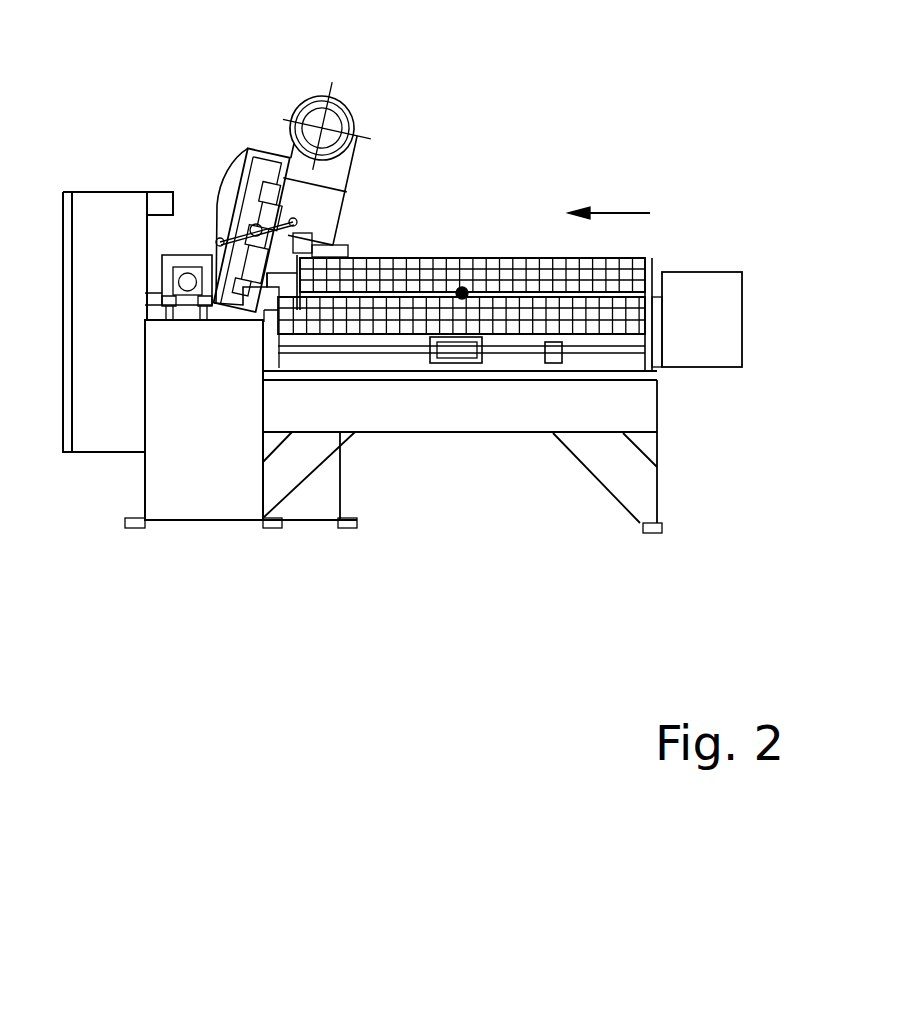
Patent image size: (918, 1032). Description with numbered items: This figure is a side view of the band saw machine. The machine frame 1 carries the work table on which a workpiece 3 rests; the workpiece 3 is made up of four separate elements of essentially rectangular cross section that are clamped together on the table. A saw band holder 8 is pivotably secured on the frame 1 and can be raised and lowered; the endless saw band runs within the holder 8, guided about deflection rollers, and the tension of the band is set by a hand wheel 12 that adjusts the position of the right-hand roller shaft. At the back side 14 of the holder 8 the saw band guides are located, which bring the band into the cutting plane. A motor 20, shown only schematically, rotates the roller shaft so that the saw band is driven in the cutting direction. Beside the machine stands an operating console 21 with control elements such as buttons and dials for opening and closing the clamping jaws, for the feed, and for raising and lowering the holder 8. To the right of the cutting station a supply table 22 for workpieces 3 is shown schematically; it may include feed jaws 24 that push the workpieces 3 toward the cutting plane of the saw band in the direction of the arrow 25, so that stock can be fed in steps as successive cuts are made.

The machine frame 1 is at (190, 482).
The workpiece 3 is at (462, 288).
The saw band holder 8 is at (228, 170).
The hand wheel 12 is at (233, 233).
The back side of the holder 14 is at (268, 180).
The motor 20 is at (347, 103).
The operating console 21 is at (100, 227).
The supply table 22 is at (513, 405).
The feed jaws 24 is at (442, 381).
The arrow 25 is at (615, 212).